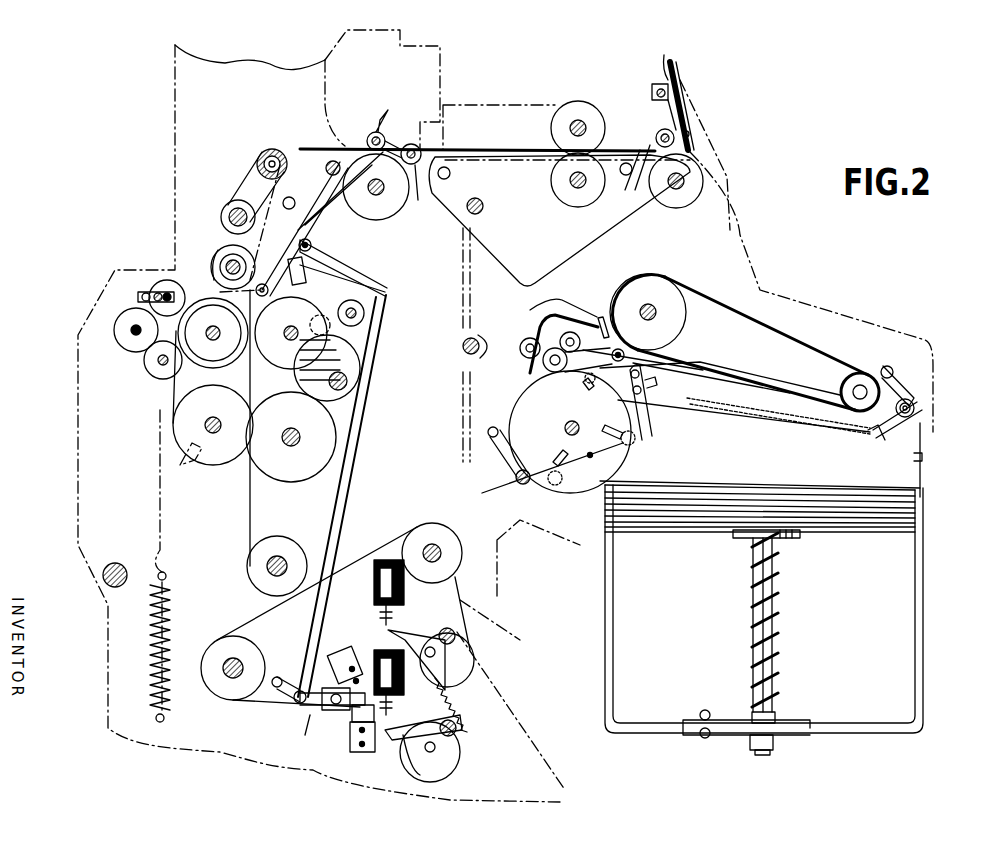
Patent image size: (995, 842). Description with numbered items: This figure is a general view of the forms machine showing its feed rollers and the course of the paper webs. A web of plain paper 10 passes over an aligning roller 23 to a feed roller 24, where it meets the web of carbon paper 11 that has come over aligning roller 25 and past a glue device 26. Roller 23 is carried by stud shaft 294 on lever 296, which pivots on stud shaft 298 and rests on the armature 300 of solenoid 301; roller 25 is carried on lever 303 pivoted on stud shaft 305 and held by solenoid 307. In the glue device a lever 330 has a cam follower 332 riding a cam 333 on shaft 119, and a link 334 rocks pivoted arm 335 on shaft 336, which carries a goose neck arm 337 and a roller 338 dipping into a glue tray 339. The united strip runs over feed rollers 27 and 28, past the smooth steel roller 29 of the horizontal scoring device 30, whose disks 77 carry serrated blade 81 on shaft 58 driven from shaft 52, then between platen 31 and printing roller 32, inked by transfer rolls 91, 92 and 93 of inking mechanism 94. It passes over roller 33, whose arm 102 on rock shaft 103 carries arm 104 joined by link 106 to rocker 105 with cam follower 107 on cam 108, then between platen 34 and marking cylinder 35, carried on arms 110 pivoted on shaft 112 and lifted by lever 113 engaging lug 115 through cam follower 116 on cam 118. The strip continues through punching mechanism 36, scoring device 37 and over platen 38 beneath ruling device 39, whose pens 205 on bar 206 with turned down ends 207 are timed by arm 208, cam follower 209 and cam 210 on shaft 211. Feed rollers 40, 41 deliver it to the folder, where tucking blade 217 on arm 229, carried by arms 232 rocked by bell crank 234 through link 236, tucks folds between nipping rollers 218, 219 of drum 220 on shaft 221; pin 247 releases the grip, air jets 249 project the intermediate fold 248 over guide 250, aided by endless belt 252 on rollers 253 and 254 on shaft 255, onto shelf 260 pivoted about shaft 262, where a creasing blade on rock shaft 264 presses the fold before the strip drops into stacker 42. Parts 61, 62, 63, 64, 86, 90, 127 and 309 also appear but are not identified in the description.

The web of plain paper 10 is at (487, 793).
The web of carbon paper 11 is at (533, 717).
The aligning roller 23 is at (432, 782).
The feed roller 24 is at (216, 692).
The aligning roller 25 is at (460, 662).
The glue-applying device 26 is at (302, 708).
The feed roller 27 is at (432, 530).
The feed roller 28 is at (290, 550).
The smooth steel roller 29 is at (280, 455).
The horizontal scoring device 30 is at (238, 461).
The platen 31 is at (275, 355).
The printing roller 32 is at (217, 365).
The roller 33 is at (272, 149).
The platen 34 is at (380, 218).
The horizontal line printing cylinder 35 is at (370, 137).
The punching mechanism 36 is at (505, 130).
The scoring device 37 is at (604, 106).
The platen 38 is at (690, 175).
The ruling device 39 is at (700, 108).
The feed roller 40 is at (566, 332).
The feed roller 41 is at (543, 368).
The stack 42 is at (928, 582).
The shaft 52 is at (345, 386).
The shaft 58 is at (215, 433).
The shaft 61 is at (296, 437).
The shaft 62 is at (226, 662).
The shaft 63 is at (441, 550).
The shaft 64 is at (270, 572).
The disks 77 is at (200, 400).
The blade 81 is at (186, 468).
The shaft 86 is at (284, 333).
The shaft 90 is at (213, 333).
The transfer roll 91 is at (150, 368).
The transfer roll 92 is at (160, 283).
The transfer roll 93 is at (122, 340).
The inking mechanism 94 is at (78, 487).
The arm 102 is at (250, 170).
The rock shaft 103 is at (225, 210).
The arm 104 is at (289, 197).
The rocker 105 is at (335, 300).
The link 106 is at (306, 237).
The cam follower 107 is at (337, 317).
The cam 108 is at (345, 351).
The arm 110 is at (410, 144).
The shaft 112 is at (412, 165).
The lever 113 is at (328, 163).
The lug 115 is at (392, 111).
The cam follower 116 is at (226, 290).
The cam 118 is at (214, 256).
The shaft 119 is at (226, 268).
The lever 127 is at (345, 190).
The ruling pen 205 is at (680, 66).
The square shaft or bar 206 is at (656, 86).
The turned down end 207 is at (669, 53).
The arm 208 is at (668, 110).
The cam follower 209 is at (690, 134).
The cam 210 is at (642, 180).
The shaft 211 is at (656, 138).
The tucking blade 217 is at (599, 316).
The nipping roller 218 is at (611, 420).
The nipping roller 219 is at (566, 382).
The drum 220 is at (580, 492).
The shaft 221 is at (566, 432).
The arm 229 is at (534, 322).
The arm 232 is at (494, 350).
The bell crank 234 is at (493, 457).
The link 236 is at (527, 362).
The pin 247 is at (594, 458).
The intermediate fold 248 is at (744, 397).
The air jet 249 is at (711, 366).
The guide 250 is at (765, 415).
The endless belt 252 is at (800, 332).
The roller 253 is at (845, 375).
The roller 254 is at (666, 290).
The shaft 255 is at (657, 313).
The shelf 260 is at (870, 438).
The shaft 262 is at (888, 365).
The rock shaft 264 is at (915, 405).
The stud shaft 294 is at (416, 762).
The lever 296 is at (437, 747).
The stud shaft 298 is at (458, 729).
The armature 300 is at (369, 740).
The solenoid 301 is at (400, 695).
The lever 303 is at (425, 630).
The stud shaft 305 is at (458, 633).
The solenoid 307 is at (378, 582).
The spring 309 is at (460, 700).
The lever 330 is at (335, 272).
The cam follower 332 is at (269, 296).
The cam 333 is at (225, 250).
The link 334 is at (340, 512).
The pivoted arm 335 is at (285, 698).
The shaft 336 is at (278, 676).
The goose neck arm 337 is at (330, 658).
The roller 338 is at (297, 736).
The tray 339 is at (334, 712).